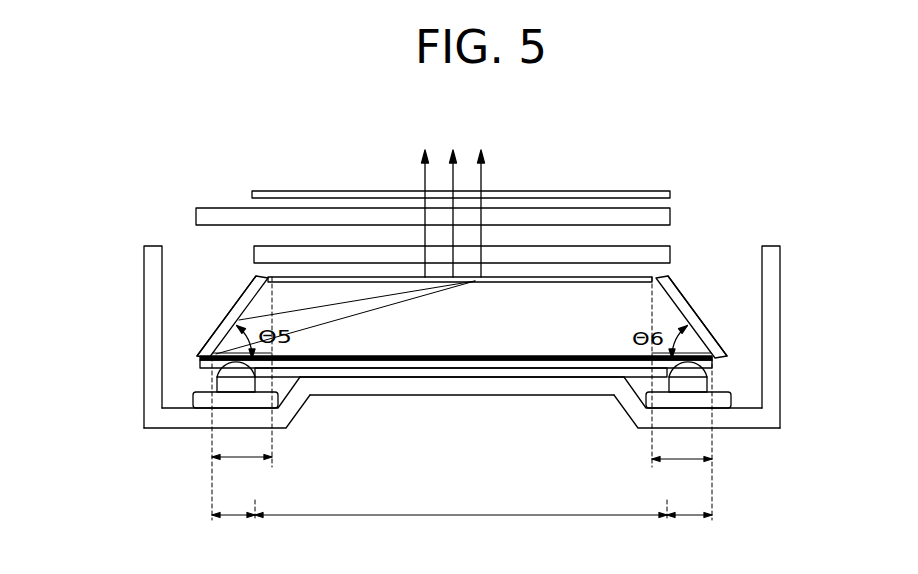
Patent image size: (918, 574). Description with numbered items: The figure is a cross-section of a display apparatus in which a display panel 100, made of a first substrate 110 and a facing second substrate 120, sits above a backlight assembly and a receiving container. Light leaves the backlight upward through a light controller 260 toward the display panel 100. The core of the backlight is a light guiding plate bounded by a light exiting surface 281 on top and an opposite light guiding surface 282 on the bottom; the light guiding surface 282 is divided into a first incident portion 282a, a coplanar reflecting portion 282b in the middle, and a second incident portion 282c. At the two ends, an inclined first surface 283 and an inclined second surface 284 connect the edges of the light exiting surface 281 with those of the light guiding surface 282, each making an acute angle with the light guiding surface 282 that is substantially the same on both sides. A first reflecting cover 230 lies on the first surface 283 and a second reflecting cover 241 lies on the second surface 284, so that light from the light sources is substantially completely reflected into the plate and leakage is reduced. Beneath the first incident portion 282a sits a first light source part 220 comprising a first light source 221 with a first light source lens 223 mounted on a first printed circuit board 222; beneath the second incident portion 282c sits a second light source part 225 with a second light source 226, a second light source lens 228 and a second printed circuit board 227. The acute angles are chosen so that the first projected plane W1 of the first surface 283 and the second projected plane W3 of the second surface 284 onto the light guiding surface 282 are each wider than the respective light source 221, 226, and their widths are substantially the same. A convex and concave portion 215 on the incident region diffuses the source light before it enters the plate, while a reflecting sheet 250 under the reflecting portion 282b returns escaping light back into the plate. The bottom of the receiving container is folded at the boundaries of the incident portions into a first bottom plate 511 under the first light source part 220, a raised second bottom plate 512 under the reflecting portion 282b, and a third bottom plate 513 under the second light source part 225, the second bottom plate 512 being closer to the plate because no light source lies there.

The display panel 100 is at (351, 189).
The first substrate 110 is at (196, 217).
The second substrate 120 is at (252, 195).
The convex and concave portion 215 is at (200, 357).
The first light source part 220 is at (155, 390).
The first light source 221 is at (216, 384).
The first printed circuit board 222 is at (193, 399).
The first light source lens 223 is at (226, 367).
The second light source part 225 is at (768, 395).
The second light source 226 is at (708, 384).
The second printed circuit board 227 is at (731, 400).
The second light source lens 228 is at (700, 371).
The first reflecting cover 230 is at (232, 318).
The second reflecting cover 241 is at (693, 318).
The reflecting sheet 250 is at (541, 373).
The light controller 260 is at (613, 255).
The light exiting surface 281 is at (557, 277).
The light guiding surface 282 is at (463, 366).
The first incident portion 282a is at (231, 530).
The reflecting portion 282b is at (461, 530).
The second incident portion 282c is at (688, 530).
The first surface 283 is at (246, 300).
The second surface 284 is at (682, 300).
The first bottom plate 511 is at (279, 426).
The second bottom plate 512 is at (376, 395).
The third bottom plate 513 is at (640, 424).
The first projected plane W1 is at (242, 469).
The second projected plane W3 is at (682, 471).